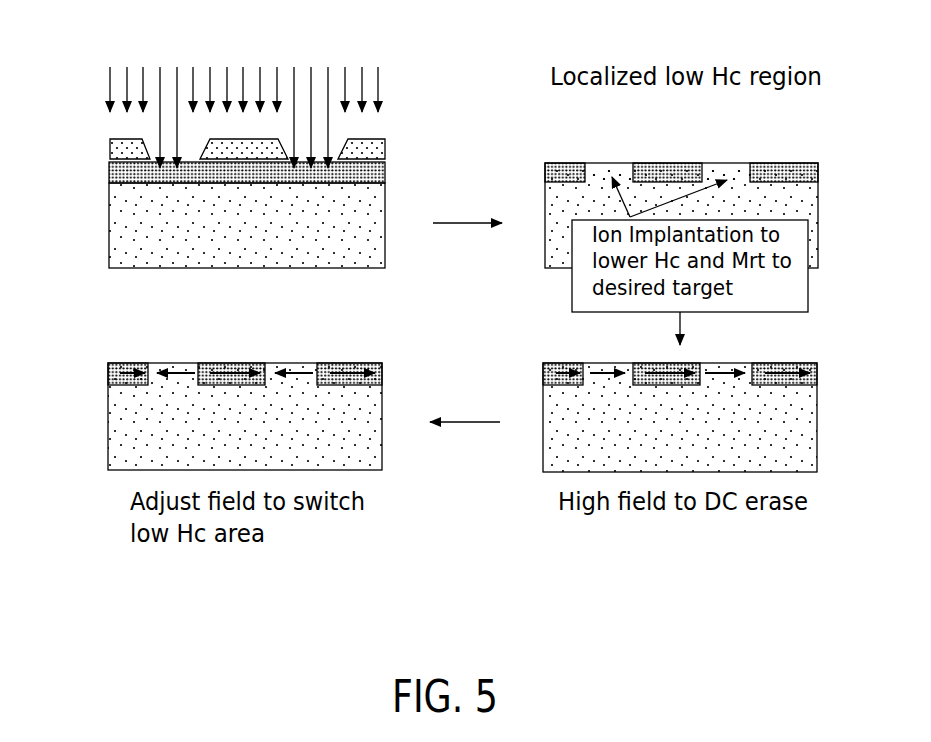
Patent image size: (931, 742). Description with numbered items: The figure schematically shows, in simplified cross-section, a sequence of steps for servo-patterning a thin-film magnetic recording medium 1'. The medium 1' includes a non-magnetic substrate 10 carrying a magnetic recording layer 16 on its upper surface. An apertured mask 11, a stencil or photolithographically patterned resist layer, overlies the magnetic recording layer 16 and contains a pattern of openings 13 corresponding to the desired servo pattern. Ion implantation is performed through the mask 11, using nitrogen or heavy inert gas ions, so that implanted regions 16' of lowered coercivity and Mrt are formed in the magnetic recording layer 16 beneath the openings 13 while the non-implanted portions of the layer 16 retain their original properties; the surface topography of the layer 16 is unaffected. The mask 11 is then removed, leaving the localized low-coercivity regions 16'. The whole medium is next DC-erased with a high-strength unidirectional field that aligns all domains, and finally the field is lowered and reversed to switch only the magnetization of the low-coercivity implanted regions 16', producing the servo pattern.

The magnetic recording medium 1' is at (193, 101).
The non-magnetic substrate 10 is at (107, 230).
The apertured mask 11 is at (105, 157).
The openings 13 is at (336, 143).
The magnetic recording layer 16 is at (477, 140).
The implanted regions 16' is at (679, 140).